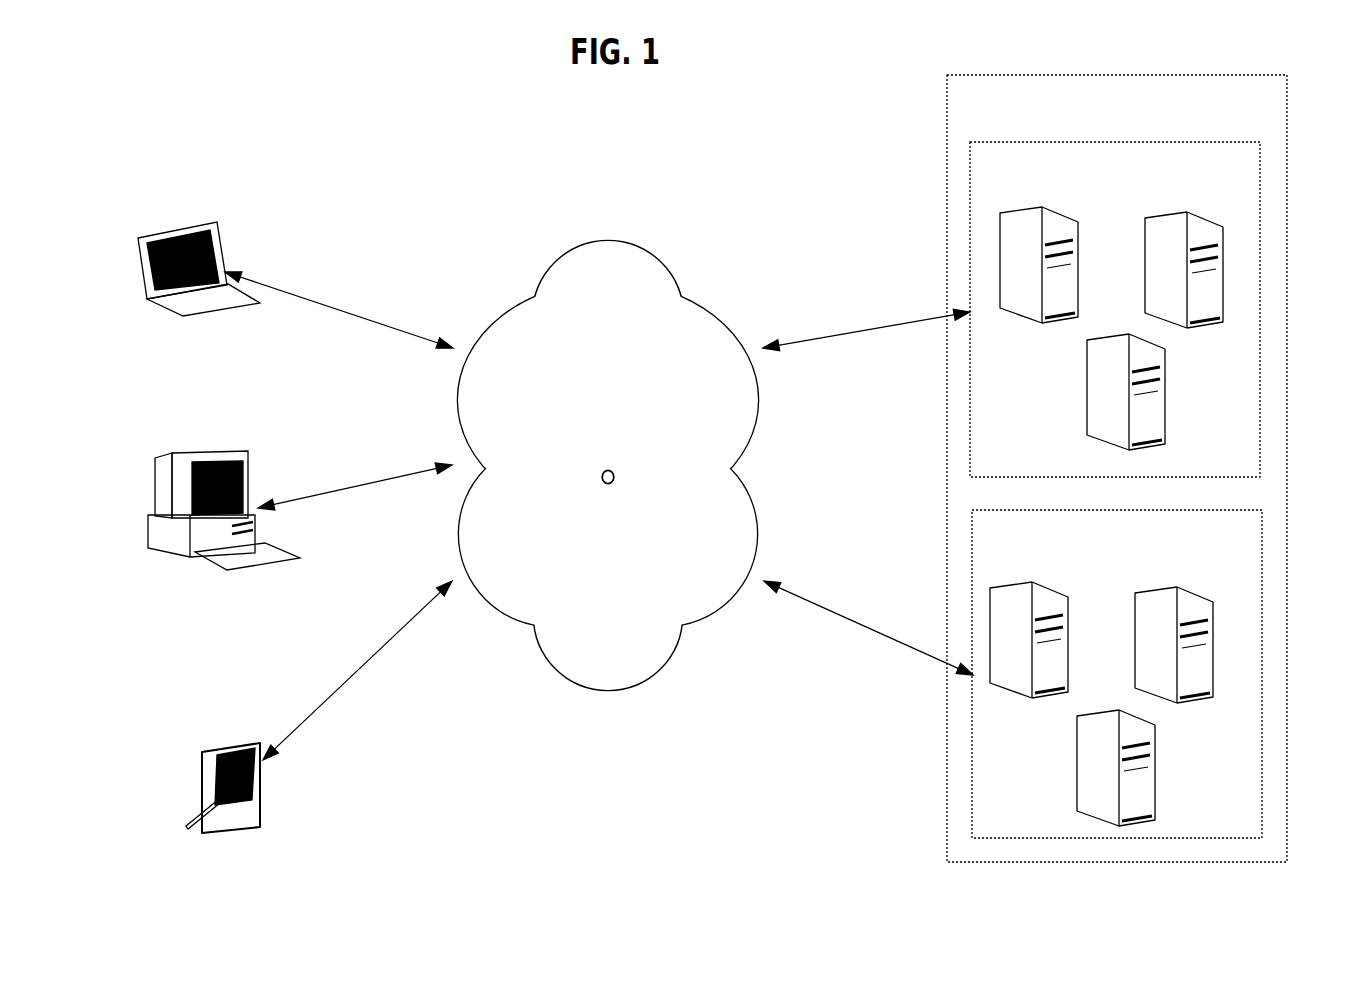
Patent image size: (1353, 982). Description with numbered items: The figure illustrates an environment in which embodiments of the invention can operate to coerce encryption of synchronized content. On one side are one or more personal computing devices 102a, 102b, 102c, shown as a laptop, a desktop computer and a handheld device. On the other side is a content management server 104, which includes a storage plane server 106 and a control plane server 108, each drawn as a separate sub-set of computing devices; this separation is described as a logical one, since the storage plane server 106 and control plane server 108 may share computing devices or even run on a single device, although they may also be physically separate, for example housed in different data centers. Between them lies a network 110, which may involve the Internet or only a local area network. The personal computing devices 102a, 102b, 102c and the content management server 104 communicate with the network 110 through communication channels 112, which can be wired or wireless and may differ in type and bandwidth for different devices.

The personal computing device 102a is at (200, 223).
The personal computing device 102b is at (225, 448).
The personal computing device 102c is at (232, 738).
The content management server 104 is at (1117, 468).
The storage plane server 106 is at (1115, 309).
The control plane server 108 is at (1117, 674).
The network 110 is at (608, 241).
The communication channels 112 is at (320, 302).